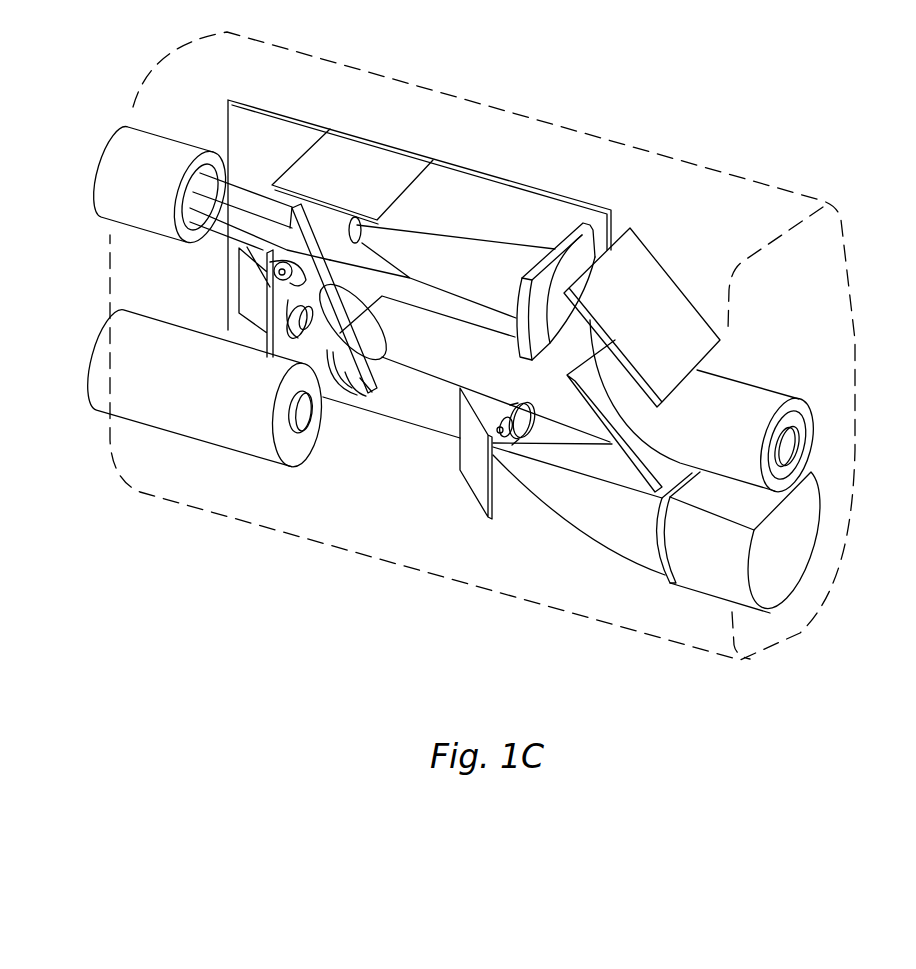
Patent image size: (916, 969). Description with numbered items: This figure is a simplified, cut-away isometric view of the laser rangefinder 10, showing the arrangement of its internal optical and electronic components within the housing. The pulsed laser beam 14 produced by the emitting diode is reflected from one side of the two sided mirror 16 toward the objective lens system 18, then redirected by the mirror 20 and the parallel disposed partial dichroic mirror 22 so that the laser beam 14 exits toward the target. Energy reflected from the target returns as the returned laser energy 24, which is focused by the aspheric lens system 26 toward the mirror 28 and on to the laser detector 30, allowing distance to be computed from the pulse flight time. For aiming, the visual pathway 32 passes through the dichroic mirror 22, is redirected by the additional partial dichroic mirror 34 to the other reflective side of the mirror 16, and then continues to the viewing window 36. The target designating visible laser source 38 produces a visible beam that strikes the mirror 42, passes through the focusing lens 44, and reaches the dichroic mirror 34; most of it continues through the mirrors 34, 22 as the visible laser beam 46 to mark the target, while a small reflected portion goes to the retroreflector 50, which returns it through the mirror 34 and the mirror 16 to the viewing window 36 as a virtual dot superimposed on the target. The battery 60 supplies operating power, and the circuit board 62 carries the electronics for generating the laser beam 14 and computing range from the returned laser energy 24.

The laser rangefinder 10 is at (244, 512).
The laser beam 14 is at (457, 236).
The two sided mirror 16 is at (390, 287).
The objective lens system 18 is at (586, 226).
The mirror 20 is at (662, 278).
The partial (dichroic) mirror 22 is at (626, 456).
The returned laser energy 24 is at (822, 536).
The aspheric lens system 26 is at (653, 525).
The mirror 28 is at (466, 486).
The laser detector 30 is at (528, 437).
The visual pathway 32 is at (432, 374).
The partial (dichroic) mirror 34 is at (373, 386).
The viewing window 36 is at (106, 156).
The target designating visible laser source 38 is at (280, 262).
The mirror 42 is at (239, 290).
The focusing lens 44 is at (312, 333).
The visible laser beam 46 is at (804, 455).
The retroreflector 50 is at (353, 396).
The battery 60 is at (205, 440).
The circuit board 62 is at (250, 106).